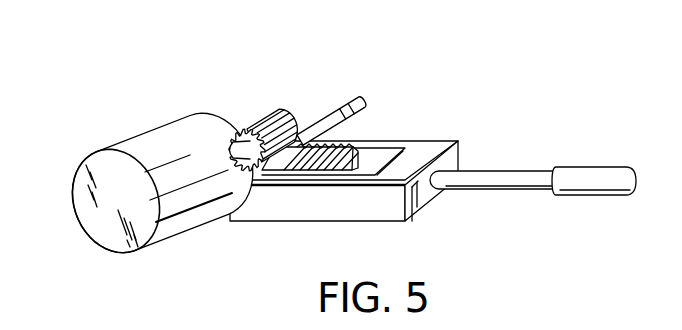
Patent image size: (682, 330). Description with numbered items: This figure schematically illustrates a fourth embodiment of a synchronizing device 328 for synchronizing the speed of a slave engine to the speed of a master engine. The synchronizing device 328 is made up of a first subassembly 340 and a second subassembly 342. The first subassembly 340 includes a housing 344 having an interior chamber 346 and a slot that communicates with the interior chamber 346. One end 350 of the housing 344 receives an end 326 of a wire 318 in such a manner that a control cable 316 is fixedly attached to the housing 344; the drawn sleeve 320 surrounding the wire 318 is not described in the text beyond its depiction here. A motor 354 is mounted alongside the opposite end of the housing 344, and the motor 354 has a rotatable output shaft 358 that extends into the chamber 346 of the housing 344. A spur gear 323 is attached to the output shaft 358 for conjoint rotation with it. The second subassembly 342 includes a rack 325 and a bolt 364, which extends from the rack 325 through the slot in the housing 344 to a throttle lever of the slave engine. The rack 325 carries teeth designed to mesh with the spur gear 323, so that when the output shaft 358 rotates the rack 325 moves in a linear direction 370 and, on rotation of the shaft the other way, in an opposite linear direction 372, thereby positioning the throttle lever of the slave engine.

The control cable 316 is at (567, 197).
The wire 318 is at (483, 187).
The sleeve 320 is at (594, 179).
The spur gear 323 is at (250, 120).
The rack 325 is at (320, 162).
The end of wire 326 is at (410, 219).
The synchronizing device 328 is at (384, 179).
The first subassembly 340 is at (408, 224).
The second subassembly 342 is at (350, 165).
The housing 344 is at (247, 207).
The interior chamber 346 is at (401, 138).
The end of housing 350 is at (430, 198).
The motor 354 is at (103, 235).
The output shaft 358 is at (237, 148).
The bolt 364 is at (347, 112).
The linear direction 370 is at (372, 68).
The opposite linear direction 372 is at (370, 48).